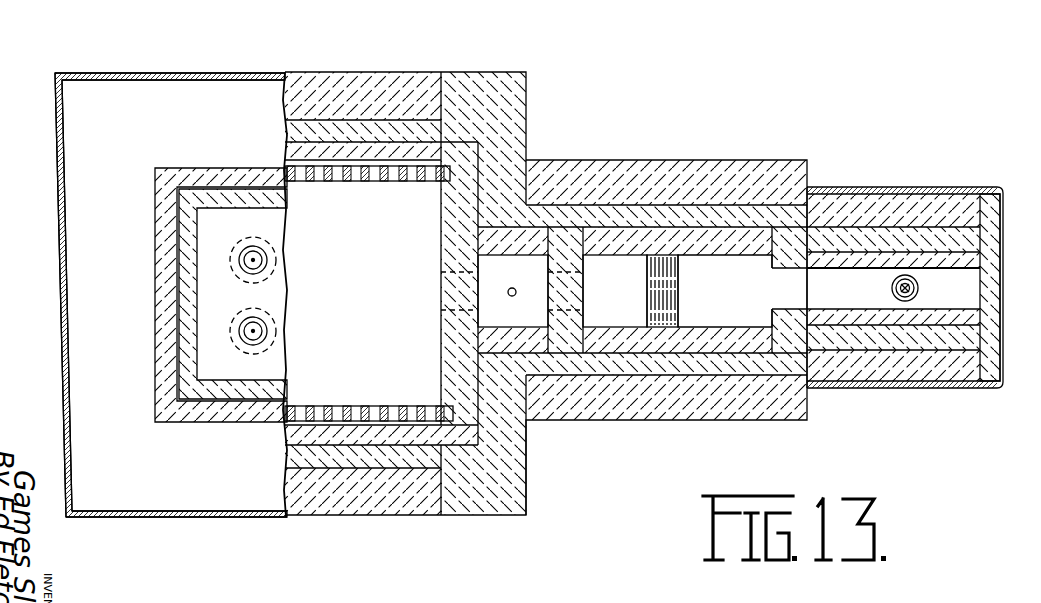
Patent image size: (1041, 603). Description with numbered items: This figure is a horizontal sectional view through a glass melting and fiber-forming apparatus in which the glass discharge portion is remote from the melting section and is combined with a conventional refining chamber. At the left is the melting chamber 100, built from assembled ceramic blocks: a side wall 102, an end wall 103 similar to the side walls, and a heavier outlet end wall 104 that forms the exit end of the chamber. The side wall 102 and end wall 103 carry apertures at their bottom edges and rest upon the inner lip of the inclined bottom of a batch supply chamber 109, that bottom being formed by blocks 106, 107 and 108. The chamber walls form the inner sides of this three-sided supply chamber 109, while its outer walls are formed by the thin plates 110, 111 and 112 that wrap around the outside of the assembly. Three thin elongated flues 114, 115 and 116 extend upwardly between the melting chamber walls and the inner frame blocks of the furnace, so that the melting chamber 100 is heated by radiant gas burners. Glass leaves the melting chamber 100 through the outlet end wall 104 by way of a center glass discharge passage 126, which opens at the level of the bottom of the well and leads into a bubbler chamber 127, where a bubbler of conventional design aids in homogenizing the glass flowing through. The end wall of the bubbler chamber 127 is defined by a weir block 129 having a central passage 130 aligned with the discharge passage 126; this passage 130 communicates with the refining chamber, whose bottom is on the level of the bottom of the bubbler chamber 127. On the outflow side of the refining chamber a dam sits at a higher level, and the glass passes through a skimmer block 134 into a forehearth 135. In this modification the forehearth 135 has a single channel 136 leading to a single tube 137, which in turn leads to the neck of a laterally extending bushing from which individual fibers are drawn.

The melting chamber 100 is at (397, 297).
The side wall 102 is at (358, 184).
The end wall 103 is at (158, 353).
The outlet end wall 104 is at (443, 362).
The block 106 is at (222, 497).
The block 107 is at (237, 97).
The block 108 is at (144, 297).
The batch supply chamber 109 is at (150, 472).
The thin plate 110 is at (285, 519).
The thin plate 111 is at (86, 74).
The thin plate 112 is at (57, 202).
The flue 114 is at (286, 413).
The flue 115 is at (248, 183).
The flue 116 is at (166, 231).
The center glass discharge passage 126 is at (441, 237).
The bubbler chamber 127 is at (524, 274).
The weir block 129 is at (590, 266).
The central passage 130 is at (585, 270).
The skimmer block 134 is at (785, 306).
The forehearth 135 is at (858, 280).
The channel 136 is at (942, 274).
The tube 137 is at (908, 292).